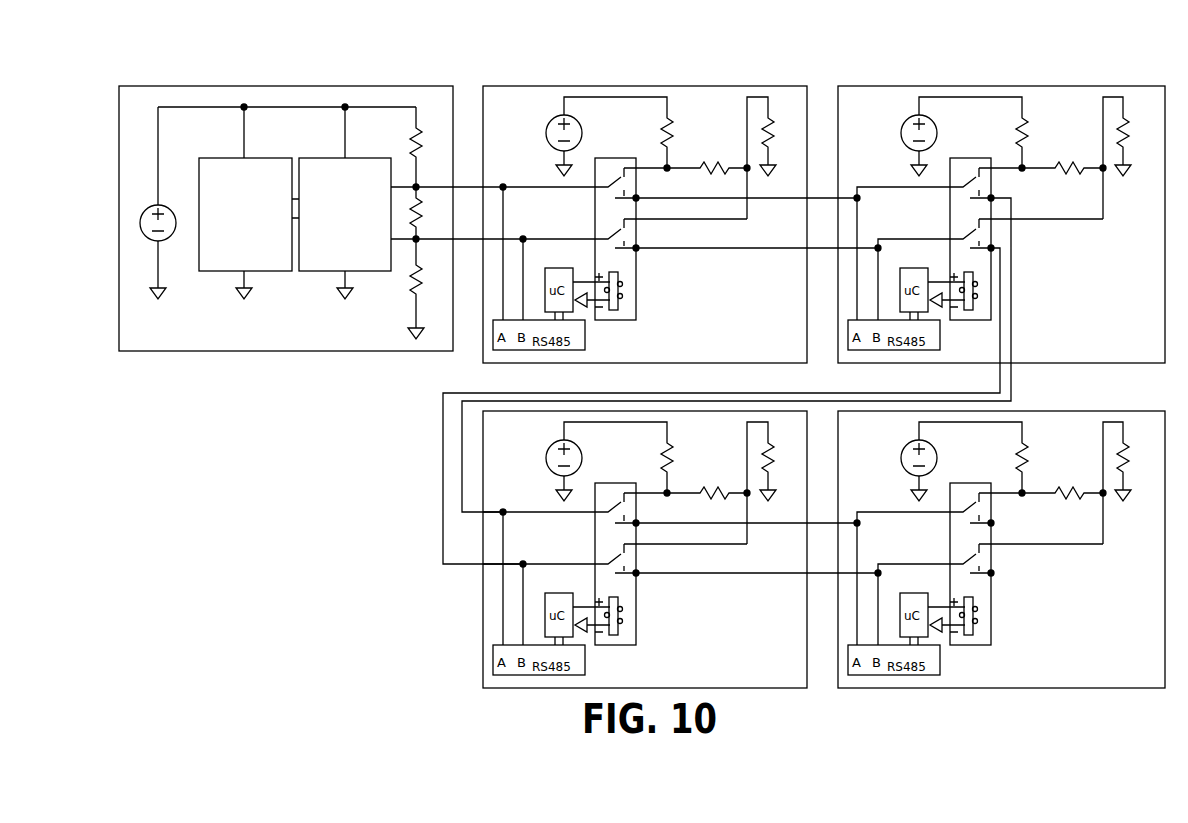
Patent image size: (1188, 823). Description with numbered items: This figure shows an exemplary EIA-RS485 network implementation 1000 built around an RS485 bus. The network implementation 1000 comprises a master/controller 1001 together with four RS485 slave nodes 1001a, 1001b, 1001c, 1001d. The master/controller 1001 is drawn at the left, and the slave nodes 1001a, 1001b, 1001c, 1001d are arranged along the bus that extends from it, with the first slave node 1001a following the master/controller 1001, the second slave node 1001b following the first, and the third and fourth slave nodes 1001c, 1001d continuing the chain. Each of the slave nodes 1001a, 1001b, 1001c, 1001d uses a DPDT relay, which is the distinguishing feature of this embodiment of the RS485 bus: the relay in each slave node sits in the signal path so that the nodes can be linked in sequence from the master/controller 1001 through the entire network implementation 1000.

The EIA-RS485 network implementation 1000 is at (342, 43).
The master/controller 1001 is at (286, 218).
The RS485 slave node 1001a is at (645, 224).
The RS485 slave node 1001b is at (1001, 224).
The RS485 slave node 1001c is at (645, 549).
The RS485 slave node 1001d is at (1001, 549).